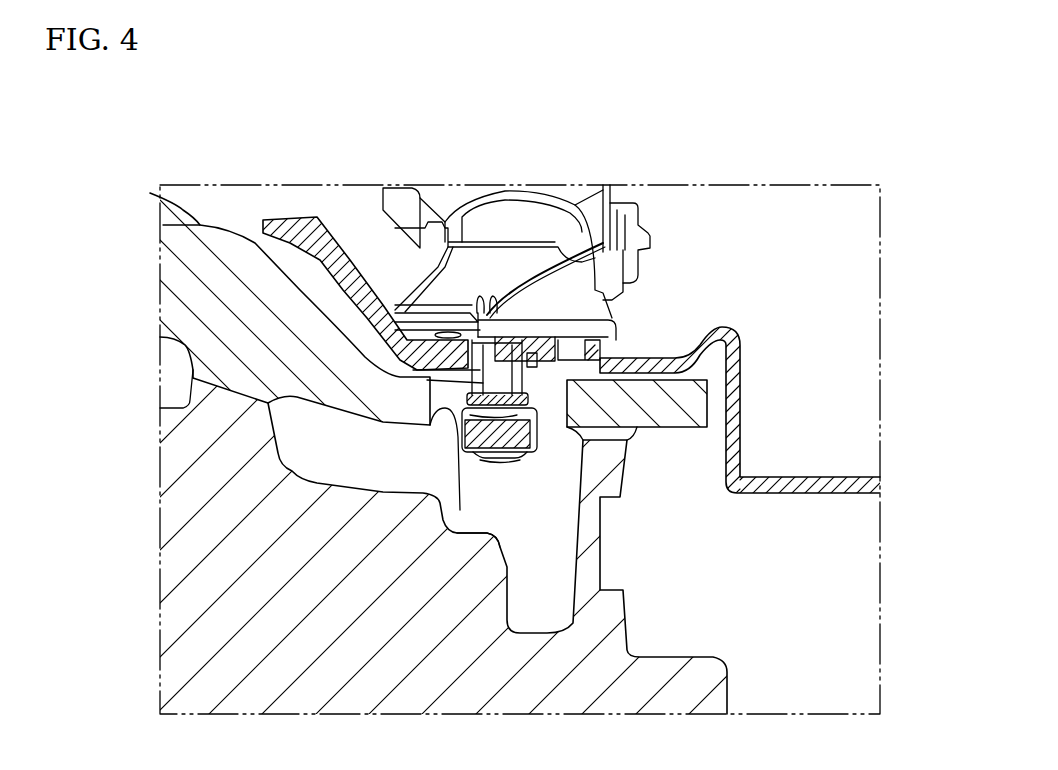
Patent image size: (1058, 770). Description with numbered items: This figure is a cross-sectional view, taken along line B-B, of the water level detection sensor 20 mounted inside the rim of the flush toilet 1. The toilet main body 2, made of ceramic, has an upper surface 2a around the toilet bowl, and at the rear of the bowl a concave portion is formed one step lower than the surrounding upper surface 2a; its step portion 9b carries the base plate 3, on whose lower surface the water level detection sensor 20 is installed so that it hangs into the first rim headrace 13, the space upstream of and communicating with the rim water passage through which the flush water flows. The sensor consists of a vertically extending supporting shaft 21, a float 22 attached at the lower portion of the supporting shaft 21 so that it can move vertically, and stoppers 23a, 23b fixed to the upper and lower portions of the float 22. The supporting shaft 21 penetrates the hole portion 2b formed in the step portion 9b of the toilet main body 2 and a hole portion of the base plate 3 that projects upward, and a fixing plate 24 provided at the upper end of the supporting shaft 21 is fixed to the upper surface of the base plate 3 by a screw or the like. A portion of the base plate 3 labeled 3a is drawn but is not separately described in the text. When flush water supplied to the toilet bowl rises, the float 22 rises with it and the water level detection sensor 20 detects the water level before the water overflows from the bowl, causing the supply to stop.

The flush toilet 1 is at (168, 142).
The toilet main body 2 is at (173, 503).
The upper surface 2a is at (150, 193).
The hole portion 2b is at (460, 510).
The base plate 3 is at (330, 247).
The flange portion of bracket 3a is at (477, 372).
The step portion 9b is at (663, 363).
The first rim headrace 13 is at (512, 448).
The water level detection sensor 20 is at (560, 355).
The supporting shaft 21 is at (505, 368).
The float 22 is at (510, 453).
The stopper 23a is at (500, 488).
The stopper 23b is at (647, 380).
The fixing plate 24 is at (486, 313).